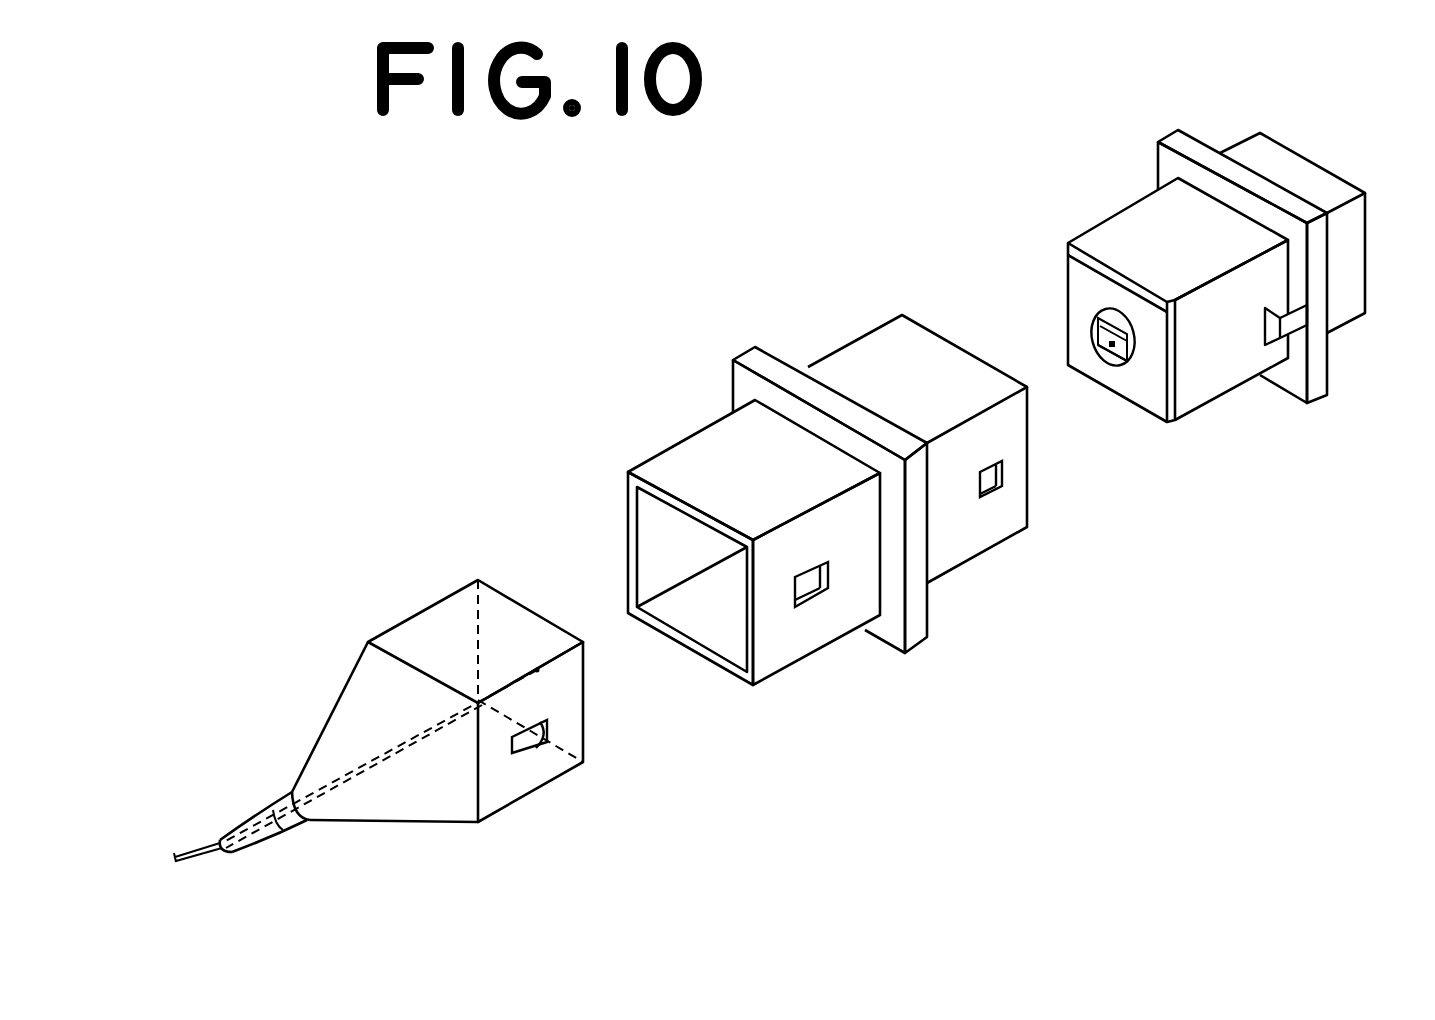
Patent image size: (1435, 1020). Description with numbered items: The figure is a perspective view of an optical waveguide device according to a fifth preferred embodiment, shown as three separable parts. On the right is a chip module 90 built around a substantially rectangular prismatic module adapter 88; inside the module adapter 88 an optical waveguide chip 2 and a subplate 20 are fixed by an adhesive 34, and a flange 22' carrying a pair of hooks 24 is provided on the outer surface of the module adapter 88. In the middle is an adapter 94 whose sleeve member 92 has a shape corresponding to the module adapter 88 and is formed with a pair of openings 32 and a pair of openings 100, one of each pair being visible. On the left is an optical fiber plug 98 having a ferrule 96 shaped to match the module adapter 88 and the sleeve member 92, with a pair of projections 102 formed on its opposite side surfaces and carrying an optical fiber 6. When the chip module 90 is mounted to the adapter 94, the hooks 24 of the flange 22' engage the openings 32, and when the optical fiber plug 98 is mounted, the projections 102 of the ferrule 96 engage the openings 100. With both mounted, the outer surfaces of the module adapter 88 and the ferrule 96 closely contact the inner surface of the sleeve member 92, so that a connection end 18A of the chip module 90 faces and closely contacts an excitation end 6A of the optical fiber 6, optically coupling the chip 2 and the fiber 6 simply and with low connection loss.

The optical waveguide chip 2 is at (1122, 363).
The optical fiber 6 is at (380, 760).
The excitation end 6A is at (537, 668).
The connection end 18A is at (1105, 360).
The subplate 20 is at (1092, 320).
The flange 22' is at (1261, 229).
The hooks 24 is at (1283, 340).
The openings 32 is at (997, 500).
The adhesive 34 is at (1116, 312).
The module adapter 88 is at (1197, 400).
The chip module 90 is at (1125, 135).
The sleeve member 92 is at (767, 667).
The adapter 94 is at (684, 360).
The ferrule 96 is at (497, 800).
The optical fiber plug 98 is at (355, 610).
The openings 100 is at (820, 595).
The projections 102 is at (537, 748).